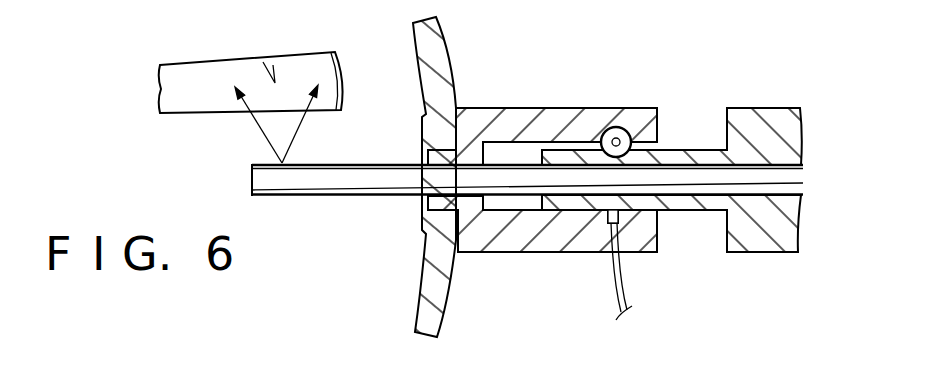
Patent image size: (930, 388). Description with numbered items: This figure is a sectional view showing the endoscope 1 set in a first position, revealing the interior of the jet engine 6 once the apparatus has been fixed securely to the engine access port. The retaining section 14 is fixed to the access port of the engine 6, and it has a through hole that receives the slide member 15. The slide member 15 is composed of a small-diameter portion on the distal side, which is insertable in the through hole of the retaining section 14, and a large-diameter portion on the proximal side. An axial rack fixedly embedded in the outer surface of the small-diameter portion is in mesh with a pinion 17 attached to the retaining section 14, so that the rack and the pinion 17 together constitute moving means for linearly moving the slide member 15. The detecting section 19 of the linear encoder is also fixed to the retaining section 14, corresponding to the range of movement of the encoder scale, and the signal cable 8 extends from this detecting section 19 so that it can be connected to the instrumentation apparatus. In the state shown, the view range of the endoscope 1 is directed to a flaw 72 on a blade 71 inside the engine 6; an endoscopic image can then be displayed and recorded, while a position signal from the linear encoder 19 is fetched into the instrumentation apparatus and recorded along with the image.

The endoscope 1 is at (697, 173).
The jet engine 6 is at (441, 58).
The signal cable 8 is at (613, 280).
The retaining section 14 is at (578, 113).
The slide member 15 is at (757, 115).
The pinion 17 is at (620, 127).
The detecting section of linear encoder 19 is at (622, 214).
The blade 71 is at (305, 68).
The flaw 72 is at (263, 62).